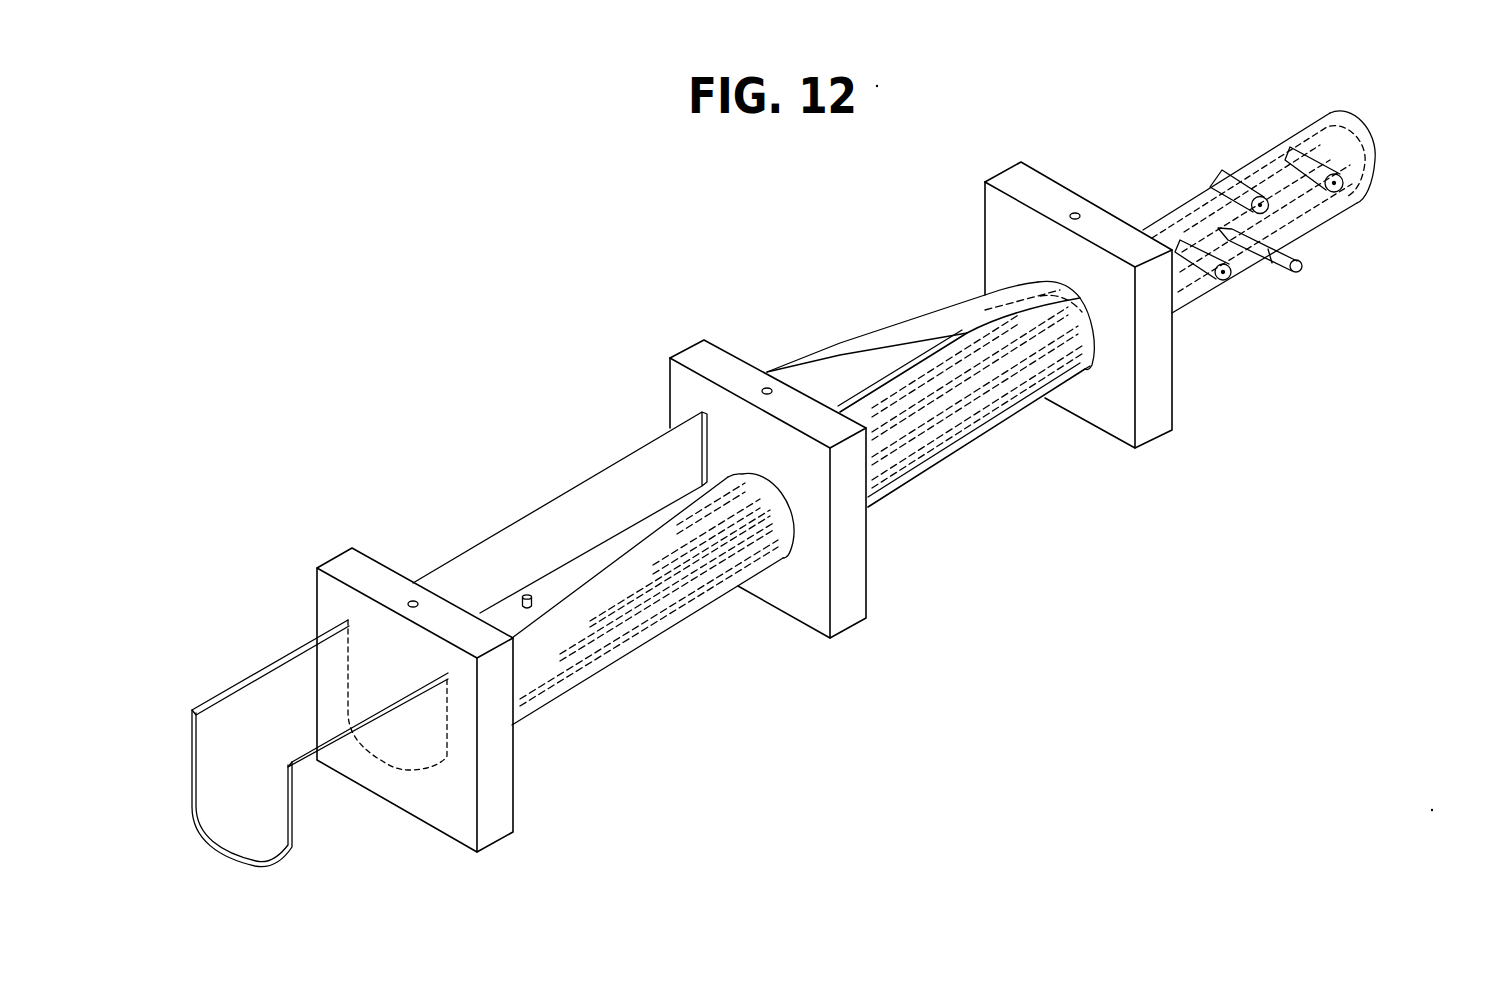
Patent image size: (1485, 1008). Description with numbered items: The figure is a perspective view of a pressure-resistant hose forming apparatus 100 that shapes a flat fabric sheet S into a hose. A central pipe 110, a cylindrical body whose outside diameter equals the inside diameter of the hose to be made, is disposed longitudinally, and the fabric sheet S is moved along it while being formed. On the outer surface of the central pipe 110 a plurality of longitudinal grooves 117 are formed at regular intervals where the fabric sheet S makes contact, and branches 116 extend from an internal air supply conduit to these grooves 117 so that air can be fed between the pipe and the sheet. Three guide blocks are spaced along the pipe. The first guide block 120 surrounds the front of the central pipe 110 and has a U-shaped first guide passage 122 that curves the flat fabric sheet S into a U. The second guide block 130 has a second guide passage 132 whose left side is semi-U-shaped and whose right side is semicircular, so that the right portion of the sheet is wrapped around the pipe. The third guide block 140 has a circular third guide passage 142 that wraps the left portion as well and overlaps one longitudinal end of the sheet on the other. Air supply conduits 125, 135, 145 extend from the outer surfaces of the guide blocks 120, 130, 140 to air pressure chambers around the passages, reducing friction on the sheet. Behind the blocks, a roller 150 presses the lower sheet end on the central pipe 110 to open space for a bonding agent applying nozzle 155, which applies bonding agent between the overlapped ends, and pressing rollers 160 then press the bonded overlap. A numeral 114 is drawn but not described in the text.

The pressure-resistant hose forming apparatus 100 is at (609, 404).
The central pipe 110 is at (573, 567).
The pin 114 is at (525, 593).
The branches 116 is at (588, 655).
The longitudinal grooves 117 is at (653, 593).
The first guide block 120 is at (338, 567).
The first guide passage 122 is at (452, 755).
The air supply conduit 125 is at (413, 600).
The second guide block 130 is at (702, 355).
The second guide passage 132 is at (790, 555).
The air supply conduit 135 is at (767, 388).
The third guide block 140 is at (1011, 172).
The third guide passage 142 is at (1097, 352).
The air supply conduit 145 is at (1077, 211).
The roller 150 is at (1205, 283).
The bonding agent applying nozzle 155 is at (1282, 277).
The pressing roller 160 is at (1217, 178).
The fabric sheet S is at (230, 707).